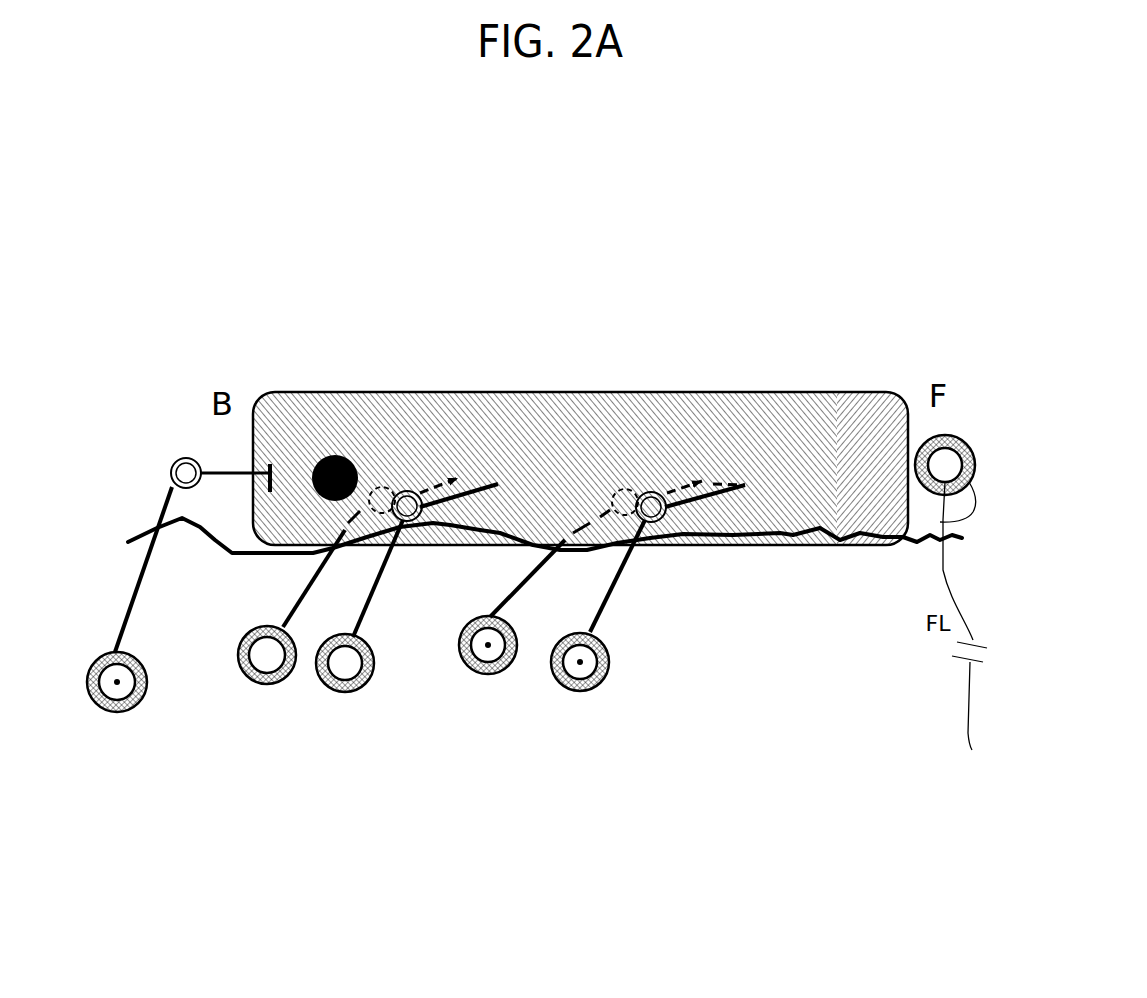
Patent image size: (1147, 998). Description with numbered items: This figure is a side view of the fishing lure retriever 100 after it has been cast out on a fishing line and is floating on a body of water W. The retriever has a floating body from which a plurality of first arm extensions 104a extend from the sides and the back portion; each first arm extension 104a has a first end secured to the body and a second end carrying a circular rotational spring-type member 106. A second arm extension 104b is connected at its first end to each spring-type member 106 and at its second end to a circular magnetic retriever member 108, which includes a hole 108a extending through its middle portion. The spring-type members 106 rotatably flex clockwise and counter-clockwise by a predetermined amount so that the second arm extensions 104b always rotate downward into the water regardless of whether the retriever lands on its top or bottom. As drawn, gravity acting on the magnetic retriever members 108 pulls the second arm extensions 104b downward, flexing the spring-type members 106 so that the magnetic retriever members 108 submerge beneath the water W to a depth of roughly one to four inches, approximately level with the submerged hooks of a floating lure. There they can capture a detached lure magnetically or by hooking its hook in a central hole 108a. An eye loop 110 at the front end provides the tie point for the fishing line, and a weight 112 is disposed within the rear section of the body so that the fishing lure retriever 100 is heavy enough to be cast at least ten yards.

The fishing lure retriever 100 is at (580, 367).
The first arm extension 104a is at (446, 481).
The second arm extension 104b is at (295, 585).
The rotational spring-type member 106 is at (173, 456).
The magnetic retriever member 108 is at (105, 718).
The hole 108a is at (122, 692).
The eye loop 110 is at (928, 436).
The weight 112 is at (309, 464).
The water W is at (838, 545).